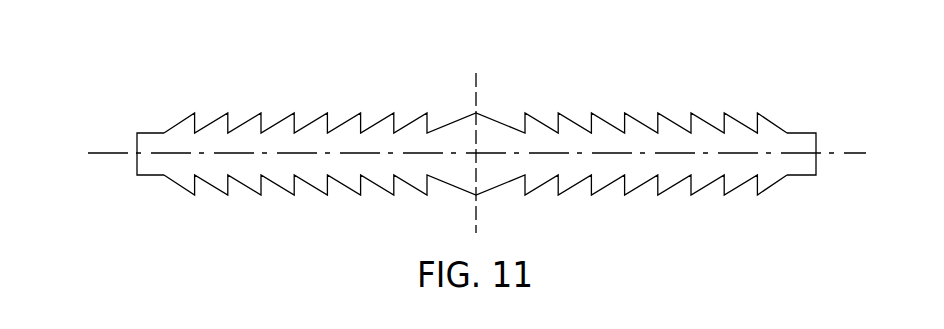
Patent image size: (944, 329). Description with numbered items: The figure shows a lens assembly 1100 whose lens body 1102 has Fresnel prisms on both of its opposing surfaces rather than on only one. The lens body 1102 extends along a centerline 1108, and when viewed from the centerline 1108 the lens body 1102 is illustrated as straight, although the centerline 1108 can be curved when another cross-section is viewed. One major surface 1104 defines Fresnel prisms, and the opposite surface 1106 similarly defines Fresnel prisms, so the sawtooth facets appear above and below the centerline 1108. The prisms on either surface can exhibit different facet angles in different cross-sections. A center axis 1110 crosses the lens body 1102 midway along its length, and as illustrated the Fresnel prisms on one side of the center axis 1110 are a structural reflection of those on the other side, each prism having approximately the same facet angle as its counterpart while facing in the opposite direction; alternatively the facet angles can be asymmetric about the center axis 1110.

The lens assembly 1100 is at (460, 143).
The lens body 1102 is at (817, 176).
The major surface 1104 is at (725, 112).
The opposite surface 1106 is at (723, 198).
The centerline 1108 is at (100, 153).
The center axis 1110 is at (476, 94).